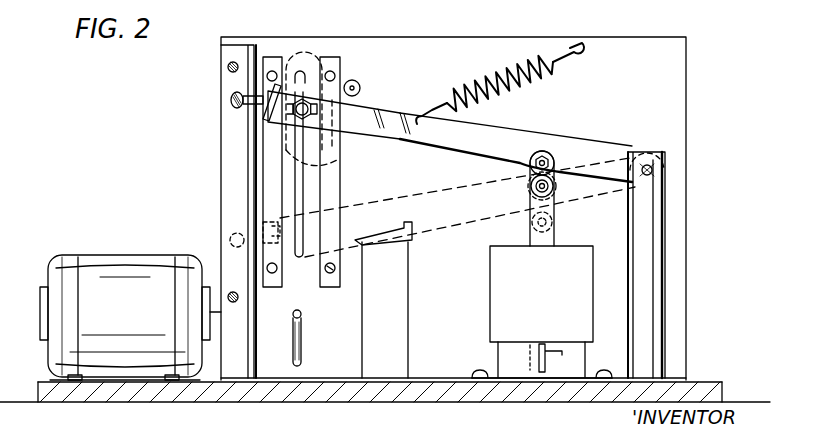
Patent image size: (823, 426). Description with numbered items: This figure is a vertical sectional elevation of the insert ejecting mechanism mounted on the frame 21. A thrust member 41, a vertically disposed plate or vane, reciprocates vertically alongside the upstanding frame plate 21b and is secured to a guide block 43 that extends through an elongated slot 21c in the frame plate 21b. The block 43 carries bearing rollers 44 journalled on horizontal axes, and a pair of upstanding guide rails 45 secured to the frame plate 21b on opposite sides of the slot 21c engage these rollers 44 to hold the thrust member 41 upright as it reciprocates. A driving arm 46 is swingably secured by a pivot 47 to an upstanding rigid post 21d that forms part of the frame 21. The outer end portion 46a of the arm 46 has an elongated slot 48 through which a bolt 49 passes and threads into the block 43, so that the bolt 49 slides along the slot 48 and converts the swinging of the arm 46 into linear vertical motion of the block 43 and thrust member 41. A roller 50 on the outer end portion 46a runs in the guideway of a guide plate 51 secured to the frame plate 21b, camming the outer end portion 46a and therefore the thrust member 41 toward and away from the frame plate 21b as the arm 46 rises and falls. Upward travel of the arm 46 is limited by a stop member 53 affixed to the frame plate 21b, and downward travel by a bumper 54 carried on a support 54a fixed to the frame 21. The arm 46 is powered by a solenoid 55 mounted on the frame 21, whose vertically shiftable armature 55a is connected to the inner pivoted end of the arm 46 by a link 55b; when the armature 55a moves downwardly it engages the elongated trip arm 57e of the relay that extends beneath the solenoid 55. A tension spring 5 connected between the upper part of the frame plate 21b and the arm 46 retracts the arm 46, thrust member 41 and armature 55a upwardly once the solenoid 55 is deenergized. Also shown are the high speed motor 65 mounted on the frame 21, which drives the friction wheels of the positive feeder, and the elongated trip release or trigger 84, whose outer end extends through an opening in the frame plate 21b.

The tension spring 5 is at (512, 65).
The frame 21 is at (303, 385).
The upstanding frame plate 21b is at (673, 58).
The elongated slot 21c is at (303, 192).
The upstanding rigid post 21d is at (643, 262).
The thrust member 41 is at (300, 168).
The guide block 43 is at (306, 81).
The bearing rollers 44 is at (337, 160).
The upstanding guide rails 45 is at (329, 68).
The driving arm 46 is at (492, 142).
The outer end portion of arm 46a is at (347, 129).
The pivot 47 is at (655, 169).
The elongated slot 48 is at (313, 110).
The bolt 49 is at (287, 119).
The roller 50 is at (240, 101).
The guide element or plate 51 is at (248, 165).
The stop member 53 is at (361, 84).
The bumper 54 is at (412, 240).
The support 54a is at (400, 312).
The solenoid 55 is at (556, 305).
The armature 55a is at (557, 232).
The link 55b is at (556, 166).
The trip arm 57e is at (546, 360).
The high speed motor 65 is at (138, 327).
The trip release or trigger 84 is at (303, 322).